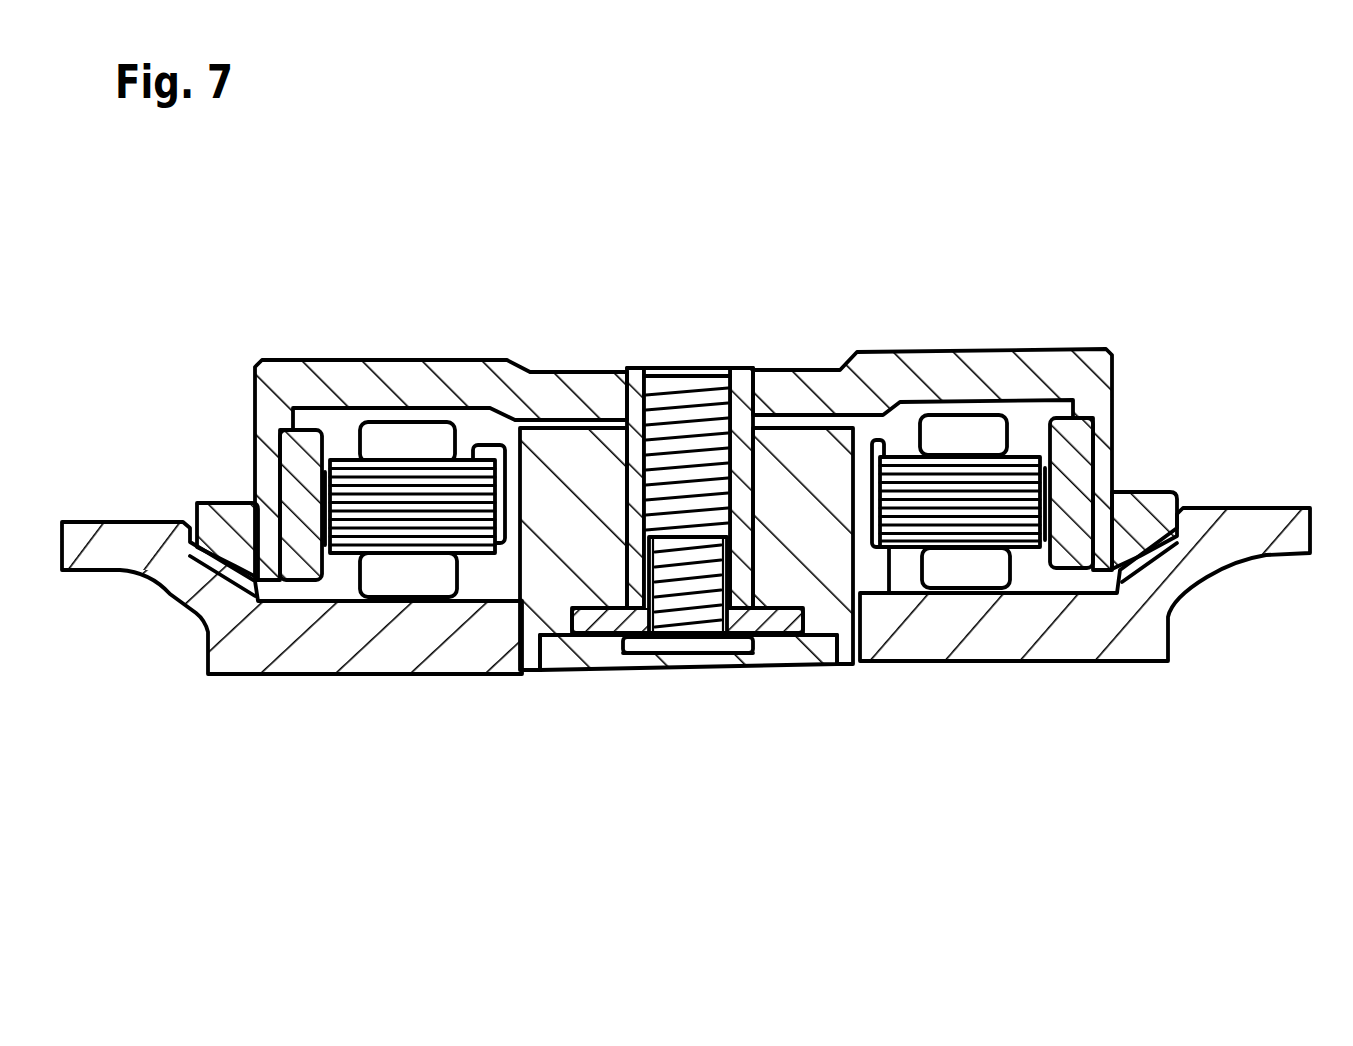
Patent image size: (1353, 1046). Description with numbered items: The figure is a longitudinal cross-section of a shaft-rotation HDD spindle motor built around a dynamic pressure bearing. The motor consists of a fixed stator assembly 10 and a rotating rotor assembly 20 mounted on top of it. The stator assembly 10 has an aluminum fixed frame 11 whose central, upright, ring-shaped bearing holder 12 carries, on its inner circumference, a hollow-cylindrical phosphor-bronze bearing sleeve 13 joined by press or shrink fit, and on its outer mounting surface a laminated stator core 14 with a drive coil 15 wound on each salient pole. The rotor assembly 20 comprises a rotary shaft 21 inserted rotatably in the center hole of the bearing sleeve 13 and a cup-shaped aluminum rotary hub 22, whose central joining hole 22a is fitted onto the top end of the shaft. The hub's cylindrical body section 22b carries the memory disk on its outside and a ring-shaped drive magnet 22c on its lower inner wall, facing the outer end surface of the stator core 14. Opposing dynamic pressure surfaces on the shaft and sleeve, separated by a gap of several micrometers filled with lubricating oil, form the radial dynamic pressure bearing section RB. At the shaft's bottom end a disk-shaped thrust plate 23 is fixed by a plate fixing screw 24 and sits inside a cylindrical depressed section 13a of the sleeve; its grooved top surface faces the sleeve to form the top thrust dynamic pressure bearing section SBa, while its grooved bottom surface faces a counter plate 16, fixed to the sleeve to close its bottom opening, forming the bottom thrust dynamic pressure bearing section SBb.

The stator assembly 10 is at (893, 690).
The fixed frame 11 is at (390, 640).
The bearing holder 12 is at (485, 580).
The bearing sleeve 13 is at (797, 445).
The depressed section 13a is at (793, 660).
The stator core 14 is at (430, 510).
The drive coil 15 is at (970, 432).
The counter plate 16 is at (717, 668).
The rotor assembly 20 is at (917, 337).
The rotary shaft 21 is at (738, 367).
The rotary hub 22 is at (462, 360).
The joining hole 22a is at (637, 395).
The body section 22b is at (1113, 408).
The drive magnet 22c is at (1078, 485).
The thrust plate 23 is at (597, 637).
The plate fixing screw 24 is at (664, 665).
The radial dynamic pressure bearing section RB is at (600, 470).
The top thrust dynamic pressure bearing section SBa is at (778, 605).
The bottom thrust dynamic pressure bearing section SBb is at (650, 638).